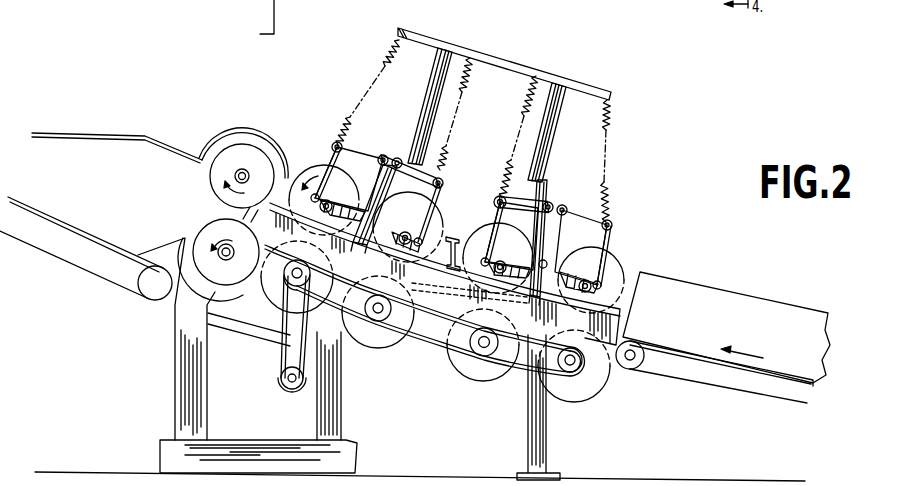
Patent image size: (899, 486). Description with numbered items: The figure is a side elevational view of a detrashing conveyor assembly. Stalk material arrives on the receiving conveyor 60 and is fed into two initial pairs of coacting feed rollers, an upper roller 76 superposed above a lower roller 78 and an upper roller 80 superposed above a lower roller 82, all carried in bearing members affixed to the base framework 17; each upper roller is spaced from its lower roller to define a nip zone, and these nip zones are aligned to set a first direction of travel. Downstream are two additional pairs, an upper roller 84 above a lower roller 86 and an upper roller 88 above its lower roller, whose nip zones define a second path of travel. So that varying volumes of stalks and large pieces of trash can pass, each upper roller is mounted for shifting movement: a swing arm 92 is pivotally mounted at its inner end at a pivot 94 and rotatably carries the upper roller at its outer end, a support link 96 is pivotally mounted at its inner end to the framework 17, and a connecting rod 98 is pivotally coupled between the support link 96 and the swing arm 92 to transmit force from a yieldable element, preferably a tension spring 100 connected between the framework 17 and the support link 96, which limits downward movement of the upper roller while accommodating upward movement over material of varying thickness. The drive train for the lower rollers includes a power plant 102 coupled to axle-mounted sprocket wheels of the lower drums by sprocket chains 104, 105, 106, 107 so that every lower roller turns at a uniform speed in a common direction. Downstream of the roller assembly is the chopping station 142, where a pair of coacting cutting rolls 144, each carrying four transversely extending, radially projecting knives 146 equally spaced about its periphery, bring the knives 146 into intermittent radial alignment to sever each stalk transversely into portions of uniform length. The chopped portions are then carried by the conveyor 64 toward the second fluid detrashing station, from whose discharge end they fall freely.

The chopping station 142 is at (263, 125).
The knives 146 is at (208, 167).
The cutting rolls 144 is at (212, 215).
The conveyor 64 is at (93, 230).
The sprocket chain 104 is at (280, 358).
The power plant 102 is at (259, 405).
The upper roller 88 is at (328, 160).
The connecting rod 98 is at (336, 140).
The tension spring 100 is at (383, 58).
The support link 96 is at (397, 158).
The swing arm 92 is at (358, 200).
The upper roller 84 is at (419, 227).
The upper roller 80 is at (478, 233).
The swing arm pivot 94 is at (522, 262).
The base framework 17 is at (580, 73).
The upper roller 76 is at (620, 272).
The receiving conveyor 60 is at (787, 375).
The sprocket chain 105 is at (342, 335).
The lower roller 86 is at (403, 347).
The sprocket chain 106 is at (450, 348).
The lower roller 82 is at (480, 380).
The sprocket chain 107 is at (515, 380).
The lower roller 78 is at (580, 398).